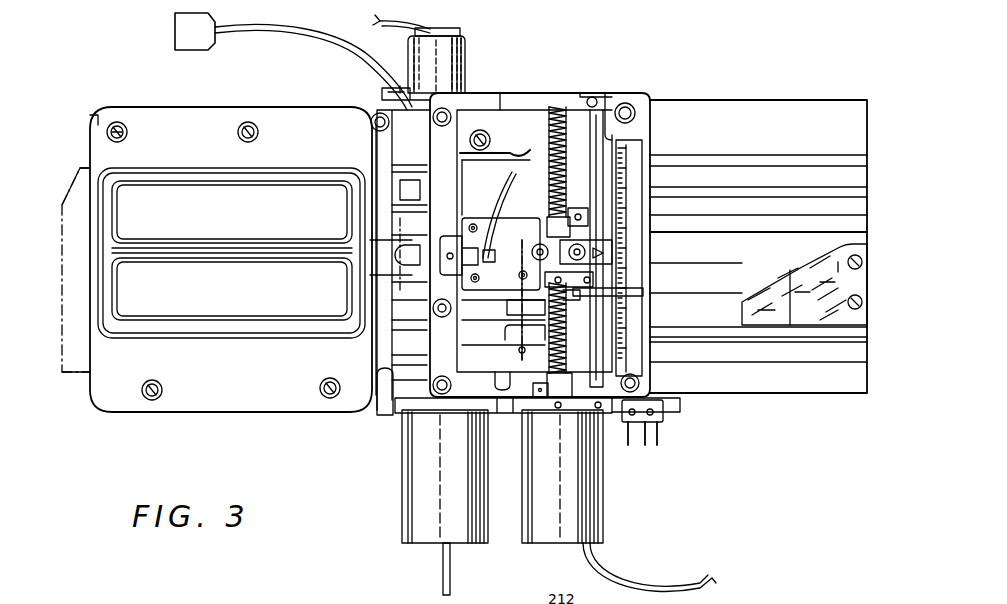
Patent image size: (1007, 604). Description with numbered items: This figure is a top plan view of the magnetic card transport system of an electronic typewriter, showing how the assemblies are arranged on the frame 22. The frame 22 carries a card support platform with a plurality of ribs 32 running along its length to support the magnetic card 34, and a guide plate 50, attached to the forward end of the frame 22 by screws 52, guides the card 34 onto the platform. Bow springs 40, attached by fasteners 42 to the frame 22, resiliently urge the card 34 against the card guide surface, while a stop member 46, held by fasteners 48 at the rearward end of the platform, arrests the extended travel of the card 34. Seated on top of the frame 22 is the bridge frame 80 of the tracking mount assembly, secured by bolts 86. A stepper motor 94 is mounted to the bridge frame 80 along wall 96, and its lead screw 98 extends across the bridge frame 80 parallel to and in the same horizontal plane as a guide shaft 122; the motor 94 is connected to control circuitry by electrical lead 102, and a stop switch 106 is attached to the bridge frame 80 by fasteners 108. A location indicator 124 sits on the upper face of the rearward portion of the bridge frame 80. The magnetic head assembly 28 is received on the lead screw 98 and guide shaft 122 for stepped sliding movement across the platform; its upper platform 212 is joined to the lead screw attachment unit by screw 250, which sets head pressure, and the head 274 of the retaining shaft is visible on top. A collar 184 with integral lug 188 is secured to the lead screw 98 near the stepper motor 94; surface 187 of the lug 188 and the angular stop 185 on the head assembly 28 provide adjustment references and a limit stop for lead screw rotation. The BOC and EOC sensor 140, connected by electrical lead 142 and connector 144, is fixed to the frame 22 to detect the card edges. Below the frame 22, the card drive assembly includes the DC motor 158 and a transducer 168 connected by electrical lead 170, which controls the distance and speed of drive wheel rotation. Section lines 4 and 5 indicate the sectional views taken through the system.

The section line 4- 4 is at (37, 260).
The section line 5- 5 is at (363, 60).
The frame 22 is at (850, 133).
The magnetic head assembly 28 is at (484, 204).
The ribs 32 is at (858, 157).
The magnetic card 34 is at (80, 353).
The bow springs 40 is at (502, 162).
The fasteners 42 is at (486, 145).
The stop member 46 is at (855, 283).
The fasteners 48 is at (868, 265).
The guide plate 50 is at (192, 141).
The screws 52 is at (121, 124).
The bridge frame 80 is at (620, 97).
The bolts 86 is at (446, 114).
The stepper motor 94 is at (547, 518).
The wall 96 is at (567, 404).
The lead screw 98 is at (561, 140).
The electrical lead 102 is at (618, 576).
The stop switch 106 is at (665, 410).
The fasteners 108 is at (660, 428).
The guide shaft 122 is at (598, 142).
The location indicator 124 is at (623, 222).
The BOC and EOC sensor 140 is at (410, 156).
The electrical lead 142 is at (262, 36).
The connector 144 is at (183, 32).
The DC motor 158 is at (427, 518).
The transducer 168 is at (438, 62).
The electrical lead 170 is at (428, 25).
The collar 184 is at (588, 400).
The angular stop 185 is at (573, 293).
The surface 187 is at (547, 399).
The integral lug 188 is at (535, 384).
The upper platform 212 is at (494, 254).
The screw 250 is at (580, 217).
The head 274 is at (608, 250).